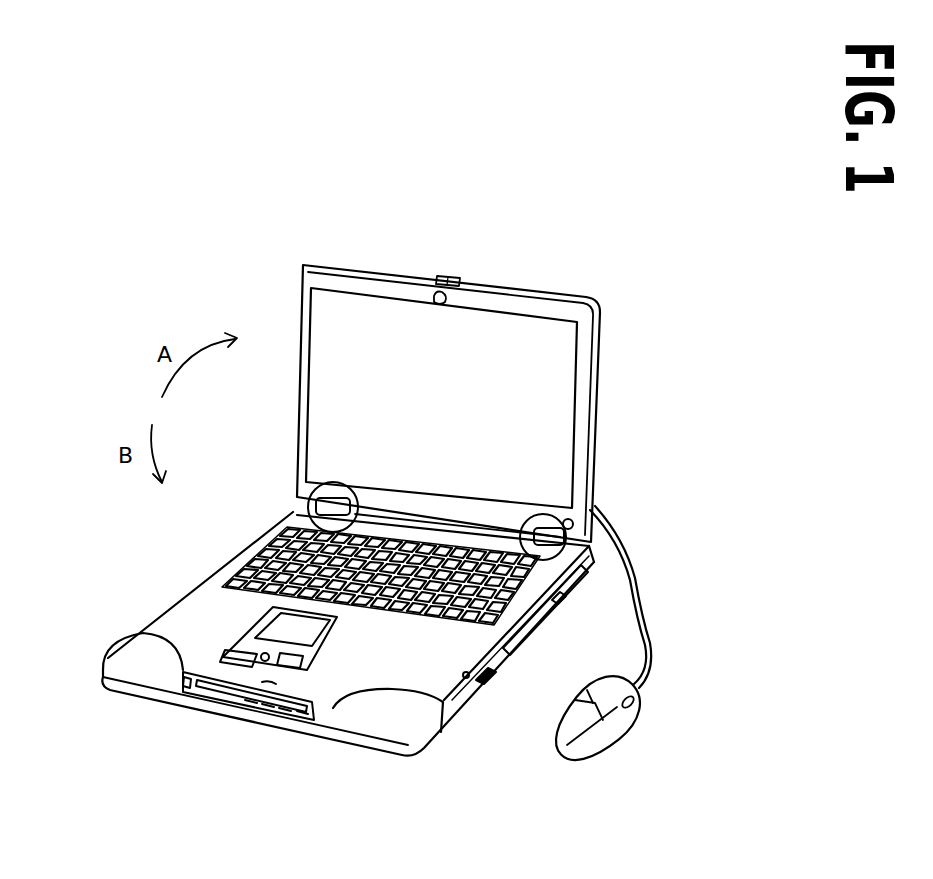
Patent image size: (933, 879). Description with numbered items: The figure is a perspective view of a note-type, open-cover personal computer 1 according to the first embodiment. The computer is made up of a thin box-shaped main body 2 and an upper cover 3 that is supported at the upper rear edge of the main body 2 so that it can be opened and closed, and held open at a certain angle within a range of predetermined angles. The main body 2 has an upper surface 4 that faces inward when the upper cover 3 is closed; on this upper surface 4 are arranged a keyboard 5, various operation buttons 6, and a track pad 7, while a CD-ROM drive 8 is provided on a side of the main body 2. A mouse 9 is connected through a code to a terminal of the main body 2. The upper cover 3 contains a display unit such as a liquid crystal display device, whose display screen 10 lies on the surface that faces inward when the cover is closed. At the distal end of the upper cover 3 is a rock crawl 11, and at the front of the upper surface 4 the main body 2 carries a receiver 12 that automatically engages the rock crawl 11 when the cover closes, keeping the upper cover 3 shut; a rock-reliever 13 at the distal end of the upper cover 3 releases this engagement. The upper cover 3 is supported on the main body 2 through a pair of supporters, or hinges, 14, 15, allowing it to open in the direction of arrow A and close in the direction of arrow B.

The note-type personal computer 1 is at (488, 138).
The main body 2 is at (200, 582).
The upper cover 3 is at (600, 353).
The upper surface 4 is at (177, 623).
The keyboard 5 is at (411, 622).
The operation buttons 6 is at (263, 707).
The track pad 7 is at (300, 632).
The CD-ROM drive 8 is at (533, 622).
The mouse 9 is at (610, 733).
The display screen 10 is at (523, 337).
The rock crawl 11 is at (440, 300).
The receiver 12 is at (275, 685).
The rock-reliever 13 is at (447, 280).
The supporter (hinge) 14 is at (310, 485).
The supporter (hinge) 15 is at (575, 516).